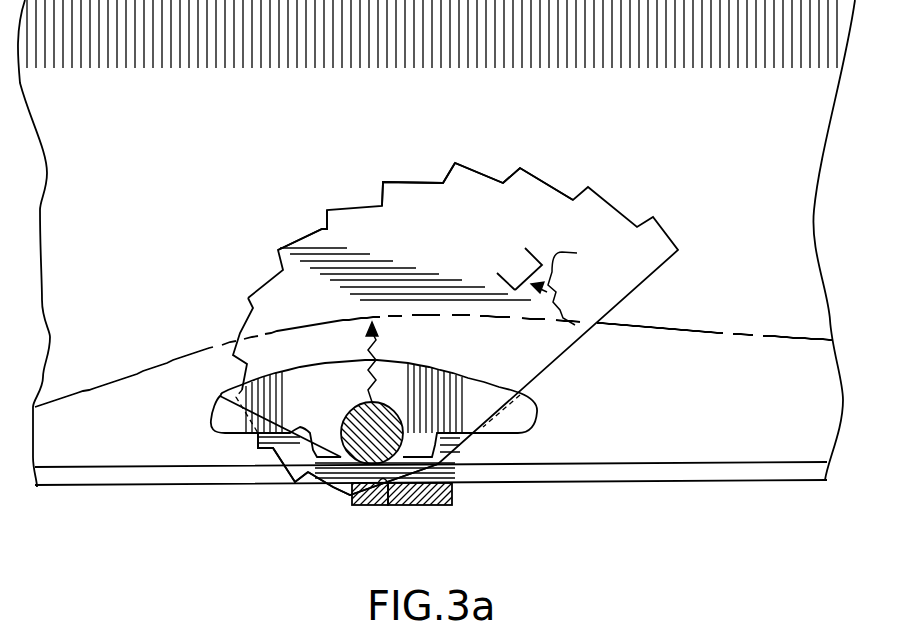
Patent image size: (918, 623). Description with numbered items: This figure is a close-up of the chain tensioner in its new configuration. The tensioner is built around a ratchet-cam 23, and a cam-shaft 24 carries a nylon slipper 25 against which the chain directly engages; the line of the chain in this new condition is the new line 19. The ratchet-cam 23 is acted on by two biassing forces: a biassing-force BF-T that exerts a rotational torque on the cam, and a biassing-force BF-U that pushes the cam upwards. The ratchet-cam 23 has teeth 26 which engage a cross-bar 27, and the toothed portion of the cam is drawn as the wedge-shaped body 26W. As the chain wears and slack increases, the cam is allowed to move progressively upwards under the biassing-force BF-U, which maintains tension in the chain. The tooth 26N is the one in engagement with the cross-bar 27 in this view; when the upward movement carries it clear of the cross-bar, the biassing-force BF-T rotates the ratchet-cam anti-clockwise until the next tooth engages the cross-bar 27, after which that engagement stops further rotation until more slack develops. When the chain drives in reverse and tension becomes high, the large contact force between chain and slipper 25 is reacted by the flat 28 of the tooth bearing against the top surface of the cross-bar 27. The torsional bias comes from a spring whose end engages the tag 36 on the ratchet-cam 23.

The new line 19 is at (70, 397).
The ratchet-cam 23 is at (320, 247).
The cam-shaft 24 is at (350, 418).
The slipper 25 is at (537, 410).
The teeth 26 is at (443, 175).
The toothed wedge 26W is at (647, 217).
The tooth 26N is at (333, 487).
The cross-bar 27 is at (452, 505).
The flat 28 is at (553, 183).
The tag 36 is at (520, 270).
The biassing-force BF-T is at (583, 283).
The biassing-force BF-U is at (376, 343).